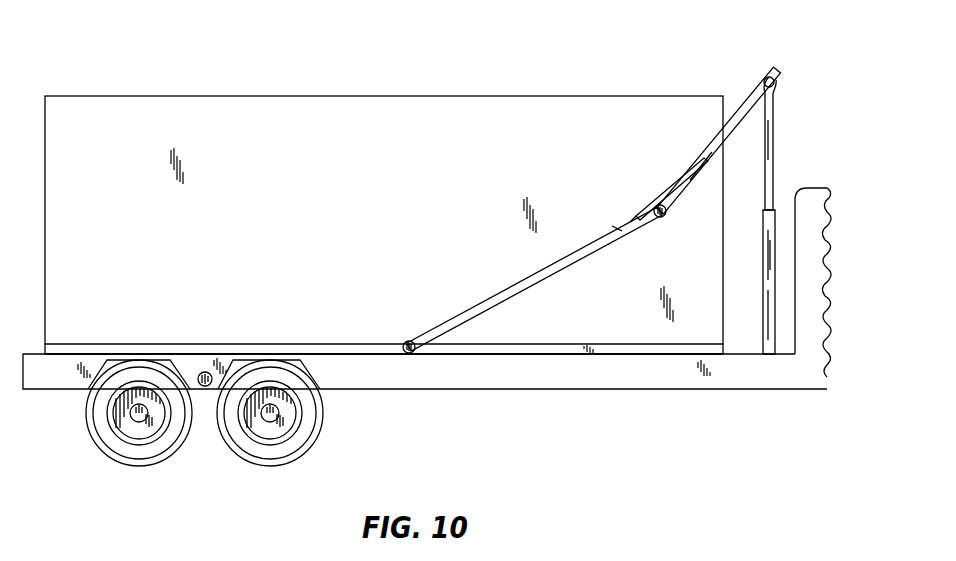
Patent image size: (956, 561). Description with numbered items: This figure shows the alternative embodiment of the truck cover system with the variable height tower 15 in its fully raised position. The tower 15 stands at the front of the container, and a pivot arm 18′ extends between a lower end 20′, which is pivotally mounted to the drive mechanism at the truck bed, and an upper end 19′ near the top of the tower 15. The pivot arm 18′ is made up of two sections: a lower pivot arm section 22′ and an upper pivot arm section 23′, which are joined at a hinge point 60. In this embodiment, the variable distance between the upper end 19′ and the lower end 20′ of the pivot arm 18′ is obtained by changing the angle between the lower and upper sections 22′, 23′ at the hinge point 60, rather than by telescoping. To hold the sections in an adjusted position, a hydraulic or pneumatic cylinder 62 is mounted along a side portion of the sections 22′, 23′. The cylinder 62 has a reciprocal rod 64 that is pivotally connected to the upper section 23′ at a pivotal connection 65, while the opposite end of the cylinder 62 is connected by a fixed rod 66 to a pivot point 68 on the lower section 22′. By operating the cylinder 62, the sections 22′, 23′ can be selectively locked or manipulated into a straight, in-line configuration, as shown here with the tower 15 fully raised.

The variable position tower 15 is at (775, 153).
The upper end of pivot arm 19′ is at (778, 78).
The upper pivot arm section 23′ is at (748, 100).
The lower pivot arm section 22′ is at (465, 312).
The lower end of pivot arm 20′ is at (405, 342).
The pivot arm 18′ is at (525, 277).
The hinge point 60 is at (708, 338).
The hydraulic or pneumatic cylinder 62 is at (650, 207).
The reciprocal rod 64 is at (668, 185).
The pivotal connection 65 is at (703, 157).
The fixed rod 66 is at (630, 220).
The pivot point 68 is at (617, 228).